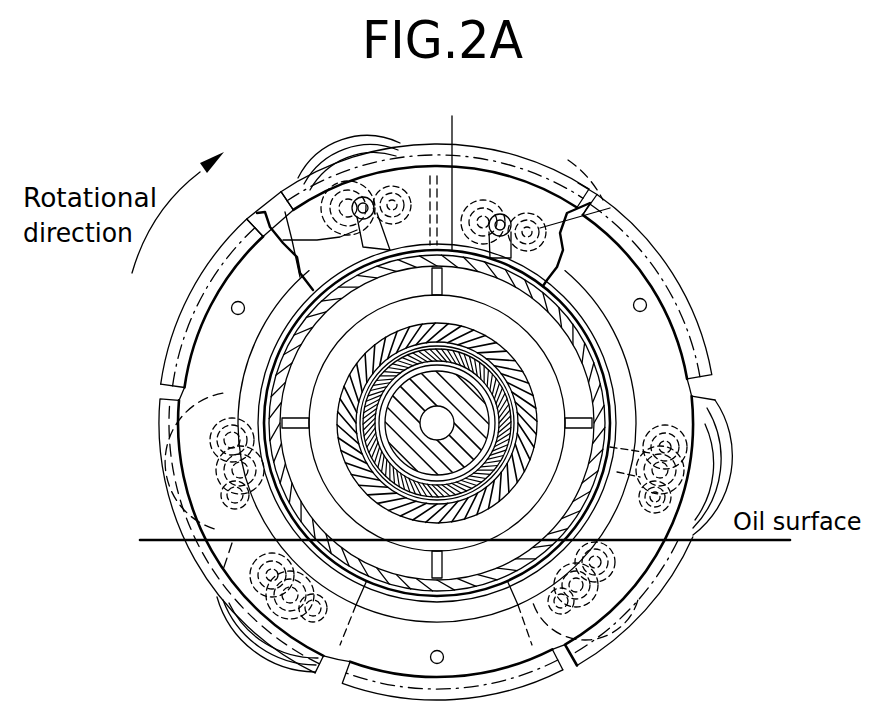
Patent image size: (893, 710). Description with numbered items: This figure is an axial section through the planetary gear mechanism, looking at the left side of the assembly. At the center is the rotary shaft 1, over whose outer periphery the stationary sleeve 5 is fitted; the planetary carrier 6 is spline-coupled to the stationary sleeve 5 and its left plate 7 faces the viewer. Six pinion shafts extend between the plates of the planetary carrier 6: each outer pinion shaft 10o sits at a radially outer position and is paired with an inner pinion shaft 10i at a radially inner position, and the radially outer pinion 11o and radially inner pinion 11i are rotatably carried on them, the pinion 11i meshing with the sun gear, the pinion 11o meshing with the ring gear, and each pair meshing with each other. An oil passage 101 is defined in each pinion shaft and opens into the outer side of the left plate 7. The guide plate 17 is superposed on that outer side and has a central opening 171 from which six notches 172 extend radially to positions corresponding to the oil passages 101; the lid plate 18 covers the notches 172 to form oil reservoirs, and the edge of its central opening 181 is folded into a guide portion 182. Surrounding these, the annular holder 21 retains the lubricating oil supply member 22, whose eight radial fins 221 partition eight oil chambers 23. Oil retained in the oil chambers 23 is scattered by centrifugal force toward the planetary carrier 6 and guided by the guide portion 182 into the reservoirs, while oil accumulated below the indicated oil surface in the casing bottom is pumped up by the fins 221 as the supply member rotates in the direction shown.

The rotary shaft 1 is at (437, 406).
The stationary sleeve 5 is at (492, 423).
The planetary carrier 6 is at (555, 152).
The left plate 7 is at (487, 143).
The outer pinion shaft 10o is at (280, 197).
The inner pinion shaft 10i is at (584, 208).
The oil passage 101 is at (368, 198).
The radially outer pinion 11o is at (332, 149).
The radially inner pinion 11i is at (119, 492).
The guide plate 17 is at (642, 219).
The central opening 171 is at (461, 170).
The notch 172 is at (300, 277).
The lid plate 18 is at (690, 328).
The central opening 181 is at (603, 356).
The guide portion 182 is at (617, 377).
The annular holder 21 is at (302, 346).
The lubricating oil supply member 22 is at (304, 366).
The fin 221 is at (303, 415).
The oil chamber 23 is at (356, 296).